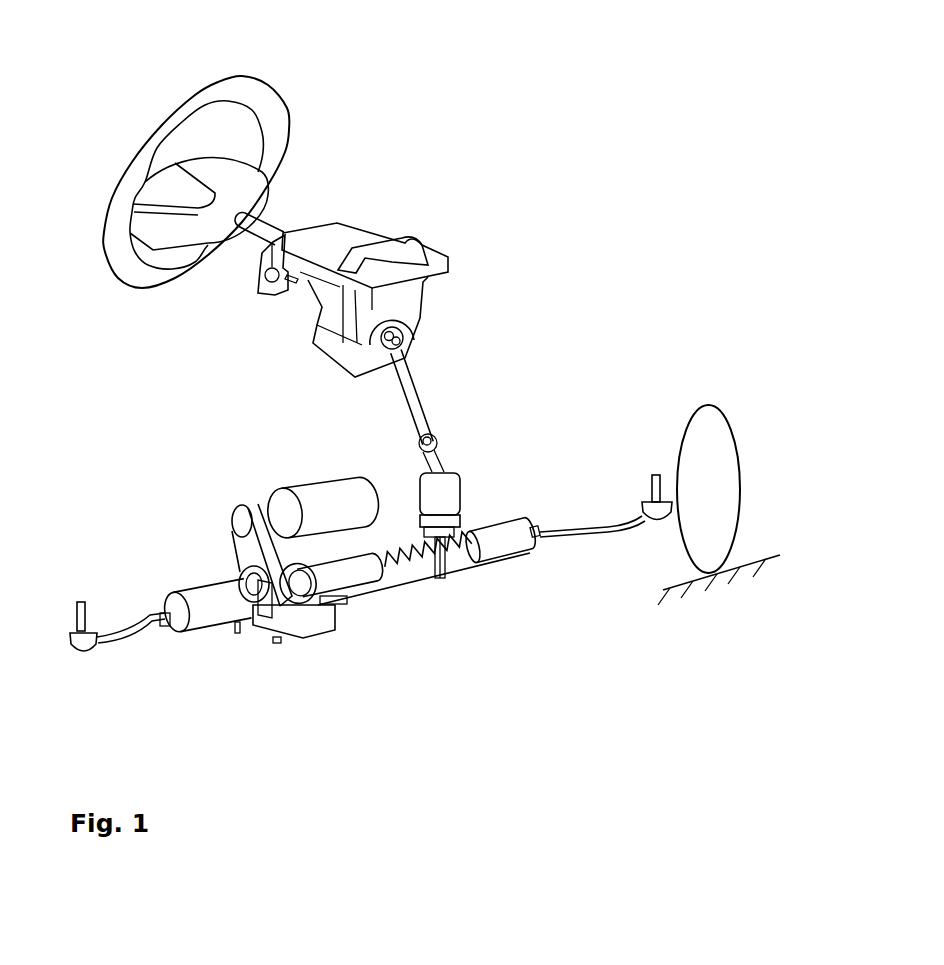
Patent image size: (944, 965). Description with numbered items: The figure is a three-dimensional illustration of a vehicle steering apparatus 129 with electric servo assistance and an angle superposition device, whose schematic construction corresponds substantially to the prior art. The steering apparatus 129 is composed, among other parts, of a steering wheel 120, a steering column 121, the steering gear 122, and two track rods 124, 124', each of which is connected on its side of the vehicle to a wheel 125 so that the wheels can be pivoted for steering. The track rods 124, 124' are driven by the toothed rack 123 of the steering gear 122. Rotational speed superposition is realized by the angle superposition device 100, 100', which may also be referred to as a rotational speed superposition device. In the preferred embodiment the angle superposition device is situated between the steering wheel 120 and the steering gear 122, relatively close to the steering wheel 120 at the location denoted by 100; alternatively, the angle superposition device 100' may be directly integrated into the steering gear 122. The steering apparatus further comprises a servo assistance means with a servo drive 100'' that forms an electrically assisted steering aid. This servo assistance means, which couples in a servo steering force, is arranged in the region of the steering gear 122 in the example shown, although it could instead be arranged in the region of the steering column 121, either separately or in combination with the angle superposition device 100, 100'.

The steering wheel 120 is at (257, 103).
The steering column 121 is at (438, 218).
The angle superposition device 100 is at (465, 372).
The angle superposition device 100' is at (516, 485).
The servo drive 100'' is at (228, 541).
The steering gear 122 is at (450, 595).
The toothed rack 123 is at (397, 573).
The track rod 124 is at (606, 596).
The track rod 124' is at (135, 679).
The wheel 125 is at (755, 470).
The steering apparatus 129 is at (124, 353).